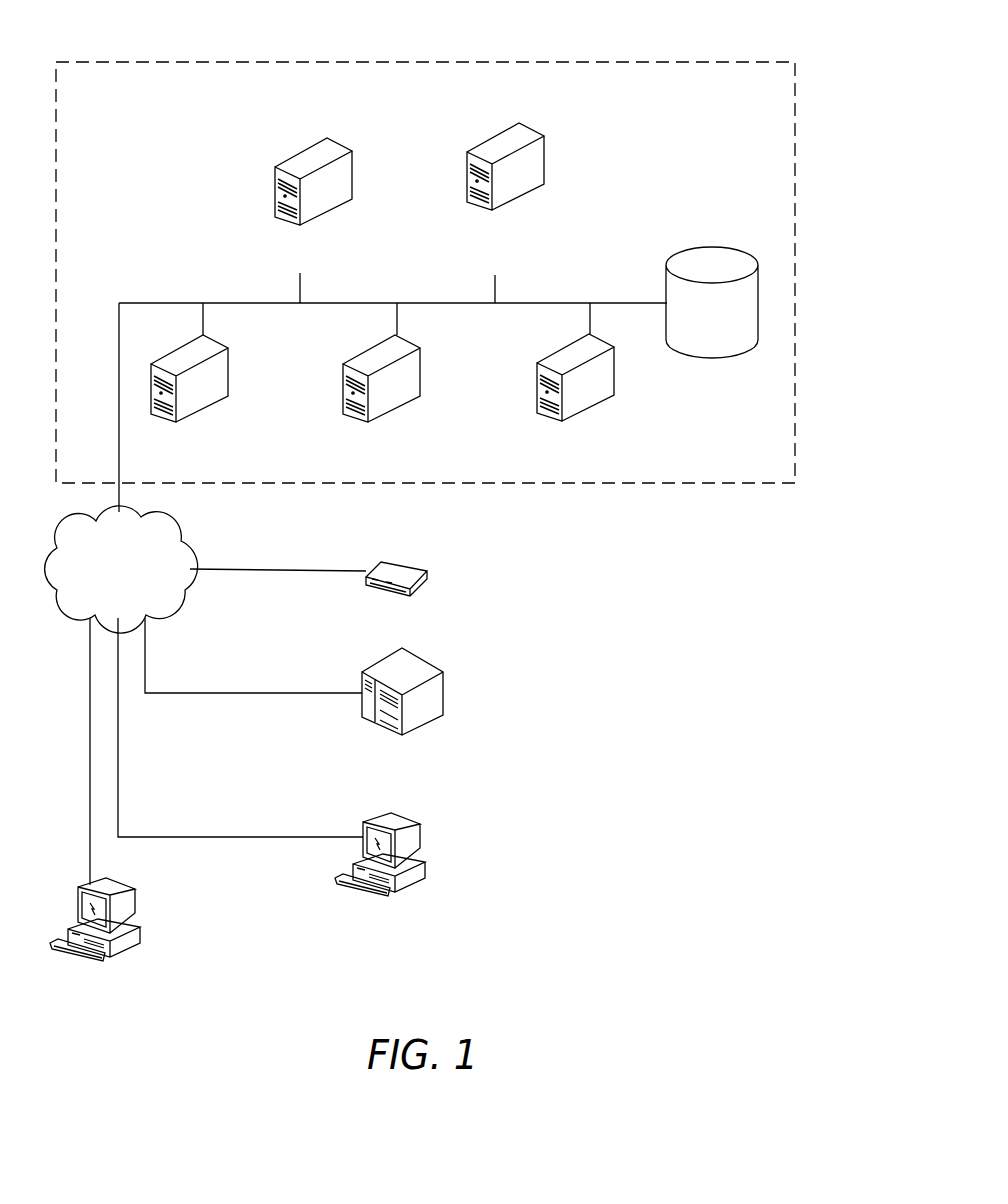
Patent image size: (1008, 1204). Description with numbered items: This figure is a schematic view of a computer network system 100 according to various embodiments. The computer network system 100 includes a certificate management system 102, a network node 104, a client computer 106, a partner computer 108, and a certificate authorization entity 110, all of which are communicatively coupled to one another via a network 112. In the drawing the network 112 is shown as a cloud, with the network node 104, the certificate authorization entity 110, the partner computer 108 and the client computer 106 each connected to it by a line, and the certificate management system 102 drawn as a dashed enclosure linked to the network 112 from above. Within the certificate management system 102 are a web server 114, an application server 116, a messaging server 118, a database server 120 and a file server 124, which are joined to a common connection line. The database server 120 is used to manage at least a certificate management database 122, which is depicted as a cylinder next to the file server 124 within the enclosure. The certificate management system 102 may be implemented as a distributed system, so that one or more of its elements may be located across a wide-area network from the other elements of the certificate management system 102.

The computer network system 100 is at (684, 52).
The certificate management system 102 is at (770, 62).
The network node 104 is at (418, 564).
The client computer 106 is at (120, 886).
The partner computer 108 is at (408, 822).
The certificate authorization entity 110 is at (422, 660).
The network 112 is at (172, 525).
The web server 114 is at (213, 337).
The application server 116 is at (340, 142).
The messaging server 118 is at (407, 337).
The database server 120 is at (531, 124).
The certificate management database 122 is at (745, 255).
The file server 124 is at (601, 340).